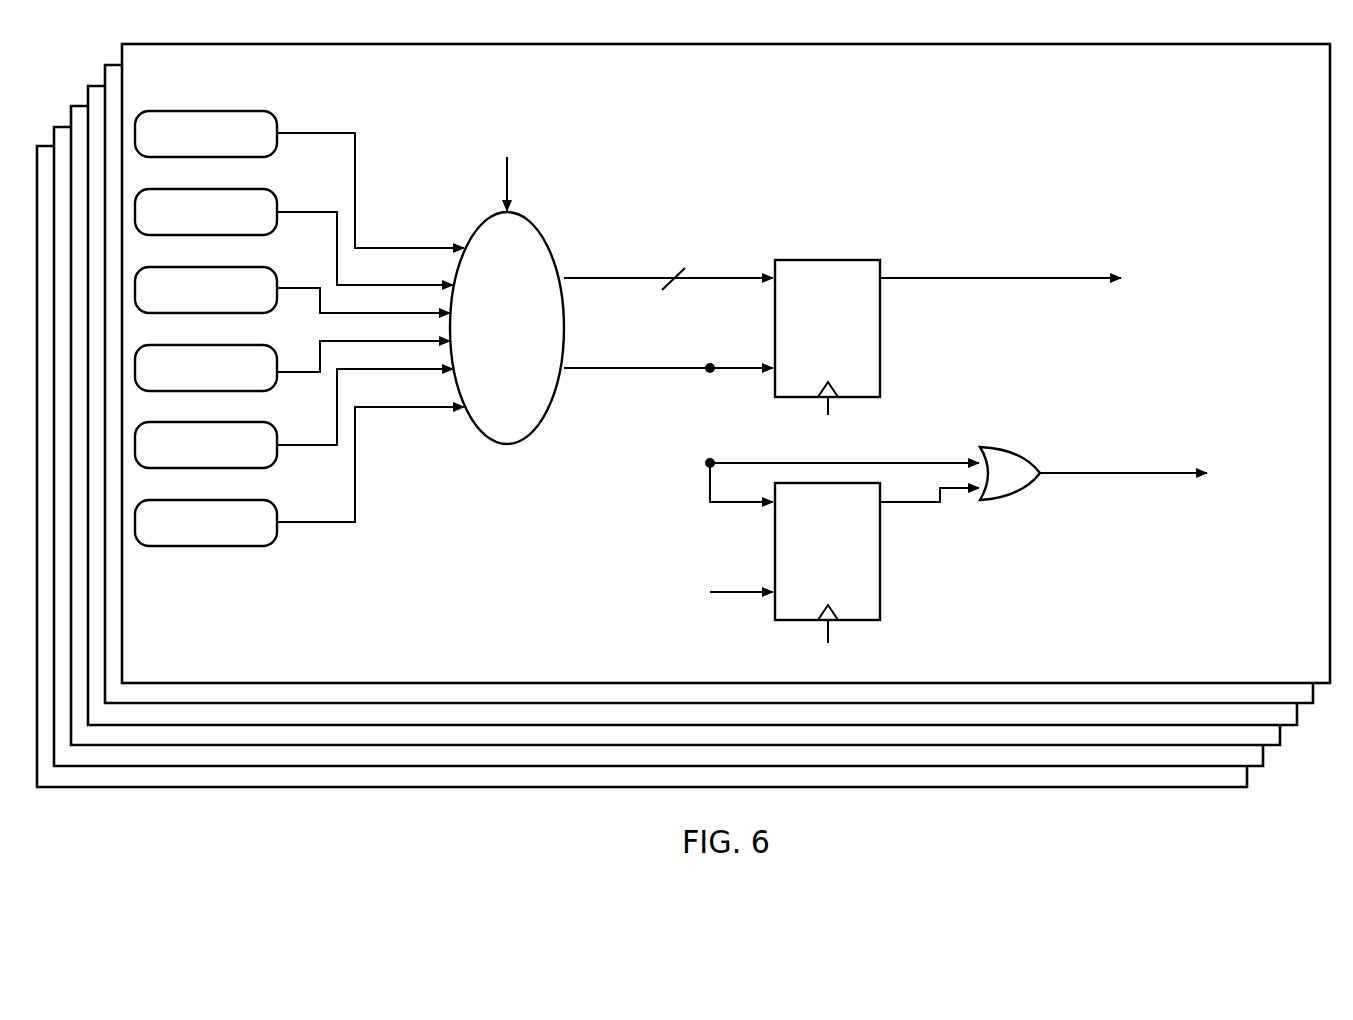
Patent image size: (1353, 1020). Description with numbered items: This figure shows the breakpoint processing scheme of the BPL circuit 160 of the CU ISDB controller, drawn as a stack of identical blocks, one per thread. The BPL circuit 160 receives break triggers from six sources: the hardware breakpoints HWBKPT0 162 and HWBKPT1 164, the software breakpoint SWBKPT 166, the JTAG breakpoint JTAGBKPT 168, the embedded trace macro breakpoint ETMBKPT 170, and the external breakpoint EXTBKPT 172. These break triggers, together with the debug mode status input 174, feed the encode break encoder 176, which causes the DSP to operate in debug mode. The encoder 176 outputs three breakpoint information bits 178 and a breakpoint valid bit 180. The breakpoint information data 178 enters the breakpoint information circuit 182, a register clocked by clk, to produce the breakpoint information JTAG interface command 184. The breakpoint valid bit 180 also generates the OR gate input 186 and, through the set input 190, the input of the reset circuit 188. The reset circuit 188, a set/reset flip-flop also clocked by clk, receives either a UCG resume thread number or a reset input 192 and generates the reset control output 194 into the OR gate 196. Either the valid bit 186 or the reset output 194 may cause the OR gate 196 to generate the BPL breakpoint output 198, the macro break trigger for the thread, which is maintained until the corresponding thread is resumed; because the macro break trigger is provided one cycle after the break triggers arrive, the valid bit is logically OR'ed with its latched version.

The BPL circuit 160 is at (1218, 72).
The HWBKPT0 162 is at (192, 111).
The HWBKPT1 164 is at (192, 189).
The SWBKPT 166 is at (192, 267).
The JTAGBKPT 168 is at (192, 345).
The ETMBKPT 170 is at (192, 422).
The EXTBKPT 172 is at (192, 500).
The debug mode status input 174 is at (509, 176).
The encode break encoder 176 is at (505, 444).
The breakpoint information bits 178 is at (715, 283).
The breakpoint valid bit 180 is at (628, 373).
The breakpoint information circuit 182 is at (812, 259).
The breakpoint information JTAG interface command 184 is at (941, 282).
The OR gate input 186 is at (908, 460).
The reset circuit 188 is at (866, 621).
The set input signal 190 is at (720, 507).
The reset input 192 is at (727, 597).
The reset control output 194 is at (930, 507).
The OR gate 196 is at (1005, 500).
The breakpoint output 198 is at (1155, 478).